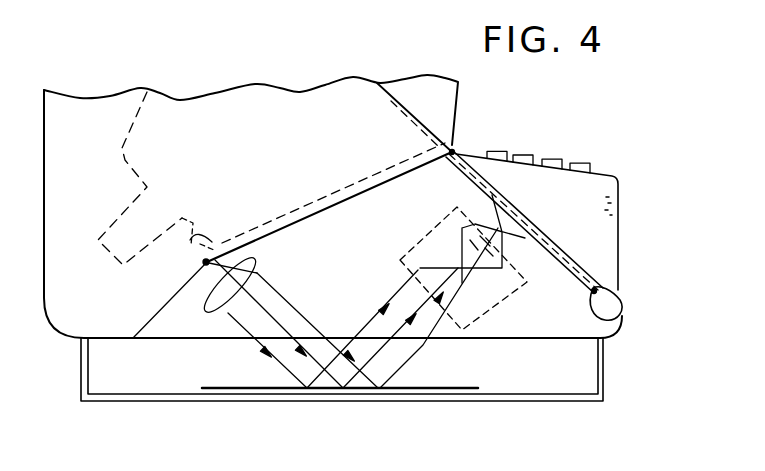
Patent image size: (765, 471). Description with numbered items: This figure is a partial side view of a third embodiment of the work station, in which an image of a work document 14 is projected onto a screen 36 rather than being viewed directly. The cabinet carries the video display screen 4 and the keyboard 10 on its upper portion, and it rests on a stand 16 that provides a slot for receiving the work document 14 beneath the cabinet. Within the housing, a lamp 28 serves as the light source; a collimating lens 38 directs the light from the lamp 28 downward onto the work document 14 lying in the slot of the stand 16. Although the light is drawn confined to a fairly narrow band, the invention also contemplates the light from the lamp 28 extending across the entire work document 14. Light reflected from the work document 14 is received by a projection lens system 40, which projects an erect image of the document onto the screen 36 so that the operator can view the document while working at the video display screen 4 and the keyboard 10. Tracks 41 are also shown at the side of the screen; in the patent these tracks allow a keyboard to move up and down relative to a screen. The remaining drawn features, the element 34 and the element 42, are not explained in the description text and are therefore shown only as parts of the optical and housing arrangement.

The video display screen 4 is at (381, 90).
The keyboard 10 is at (574, 212).
The work document 14 is at (443, 390).
The stand 16 is at (607, 368).
The lamp 28 is at (173, 278).
The beam splitter plate 34 is at (450, 152).
The screen 36 is at (561, 266).
The collimating lens 38 is at (262, 264).
The projection lens system 40 is at (408, 248).
The tracks 41 is at (619, 313).
The housing cover 42 is at (602, 172).